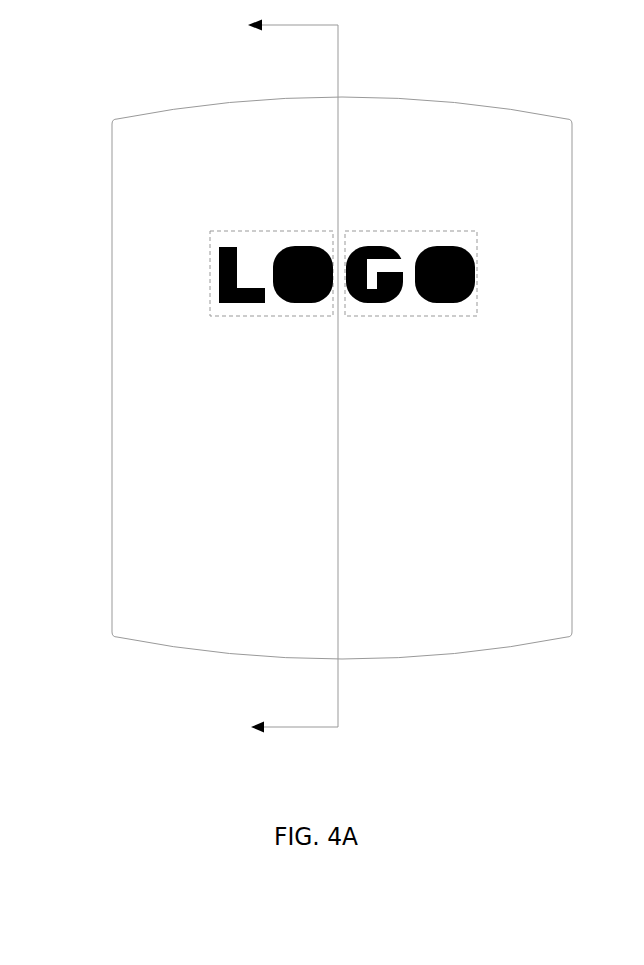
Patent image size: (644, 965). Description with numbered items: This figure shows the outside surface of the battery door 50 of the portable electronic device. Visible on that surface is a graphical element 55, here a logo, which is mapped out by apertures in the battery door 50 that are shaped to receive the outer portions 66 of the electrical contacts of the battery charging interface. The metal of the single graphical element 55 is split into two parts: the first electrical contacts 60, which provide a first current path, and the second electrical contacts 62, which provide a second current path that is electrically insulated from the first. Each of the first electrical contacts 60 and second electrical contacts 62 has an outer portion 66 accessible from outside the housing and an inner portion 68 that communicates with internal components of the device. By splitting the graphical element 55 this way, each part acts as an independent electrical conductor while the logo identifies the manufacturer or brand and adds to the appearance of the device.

The battery door 50 is at (176, 635).
The graphical element 55 is at (172, 221).
The first electrical contacts 60 is at (185, 232).
The second electrical contacts 62 is at (418, 243).
The outer portion 66 is at (218, 268).
The inner portion 68 is at (232, 305).